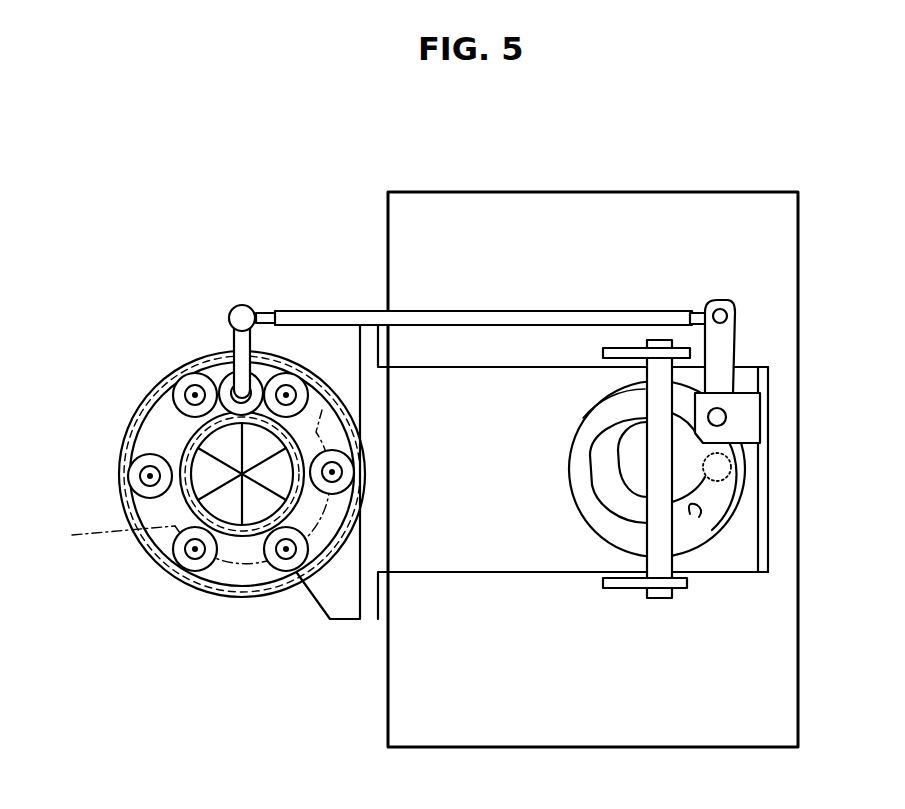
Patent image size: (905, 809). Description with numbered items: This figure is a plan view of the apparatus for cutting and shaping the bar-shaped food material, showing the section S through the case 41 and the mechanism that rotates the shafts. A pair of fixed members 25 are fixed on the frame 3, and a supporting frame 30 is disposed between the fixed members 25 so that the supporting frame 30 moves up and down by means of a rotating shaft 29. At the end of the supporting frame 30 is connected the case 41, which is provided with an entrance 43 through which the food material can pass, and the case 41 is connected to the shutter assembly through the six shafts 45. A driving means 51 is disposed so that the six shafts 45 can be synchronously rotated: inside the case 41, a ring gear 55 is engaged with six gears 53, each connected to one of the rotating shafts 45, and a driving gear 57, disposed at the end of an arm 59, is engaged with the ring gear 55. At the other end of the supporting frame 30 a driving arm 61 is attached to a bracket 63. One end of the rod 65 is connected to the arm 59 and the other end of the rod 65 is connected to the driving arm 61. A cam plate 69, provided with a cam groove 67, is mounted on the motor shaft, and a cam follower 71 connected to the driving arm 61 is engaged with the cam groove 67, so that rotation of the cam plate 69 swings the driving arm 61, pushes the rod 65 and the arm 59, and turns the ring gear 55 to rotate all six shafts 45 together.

The frame 3 is at (562, 192).
The fixed members 25 is at (603, 352).
The rotating shaft 29 is at (658, 598).
The supporting frame 30 is at (450, 578).
The case 41 is at (122, 493).
The entrance 43 is at (160, 517).
The shafts 45 is at (145, 475).
The driving means 51 is at (497, 290).
The gears 53 is at (130, 447).
The ring gear 55 is at (148, 397).
The driving gear 57 is at (268, 363).
The arm 59 is at (222, 313).
The driving arm 61 is at (723, 352).
The bracket 63 is at (760, 380).
The rod 65 is at (350, 310).
The cam groove 67 is at (700, 510).
The cam plate 69 is at (700, 515).
The cam follower 71 is at (731, 464).
The section line S is at (191, 487).